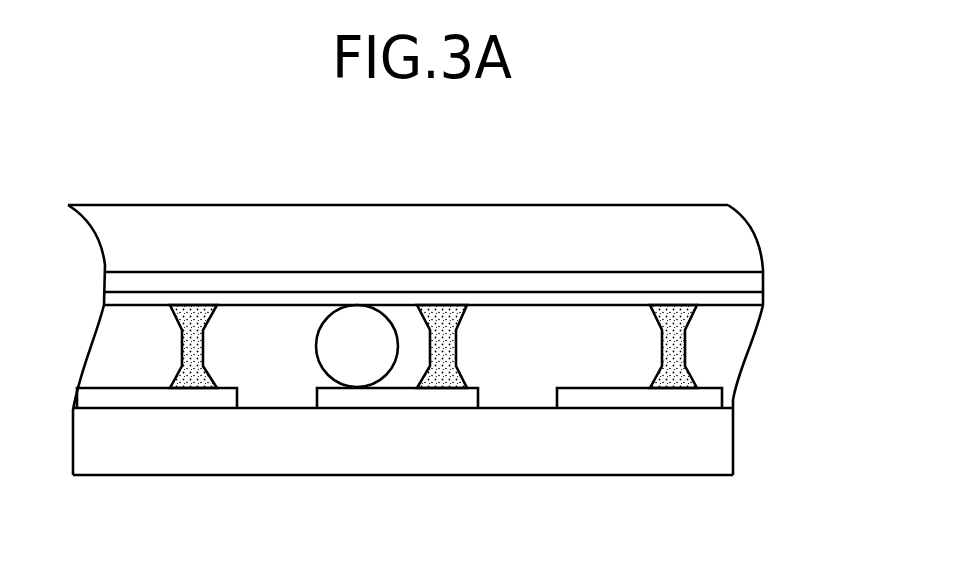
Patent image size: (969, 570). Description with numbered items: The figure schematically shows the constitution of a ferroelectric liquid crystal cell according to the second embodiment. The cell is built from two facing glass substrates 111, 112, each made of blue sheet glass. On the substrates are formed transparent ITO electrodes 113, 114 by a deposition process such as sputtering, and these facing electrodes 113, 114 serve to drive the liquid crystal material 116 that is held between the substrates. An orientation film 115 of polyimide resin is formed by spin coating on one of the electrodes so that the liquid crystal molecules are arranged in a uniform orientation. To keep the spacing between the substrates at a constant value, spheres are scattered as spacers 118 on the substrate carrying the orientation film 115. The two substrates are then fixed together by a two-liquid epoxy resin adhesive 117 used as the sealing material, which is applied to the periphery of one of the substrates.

The substrate 111 is at (548, 232).
The substrate 112 is at (575, 450).
The electrode 113 is at (682, 277).
The electrode 114 is at (668, 390).
The orientation film 115 is at (745, 292).
The liquid crystal material 116 is at (717, 338).
The two-liquid epoxy resin adhesive 117 is at (687, 360).
The spacers 118 is at (358, 363).